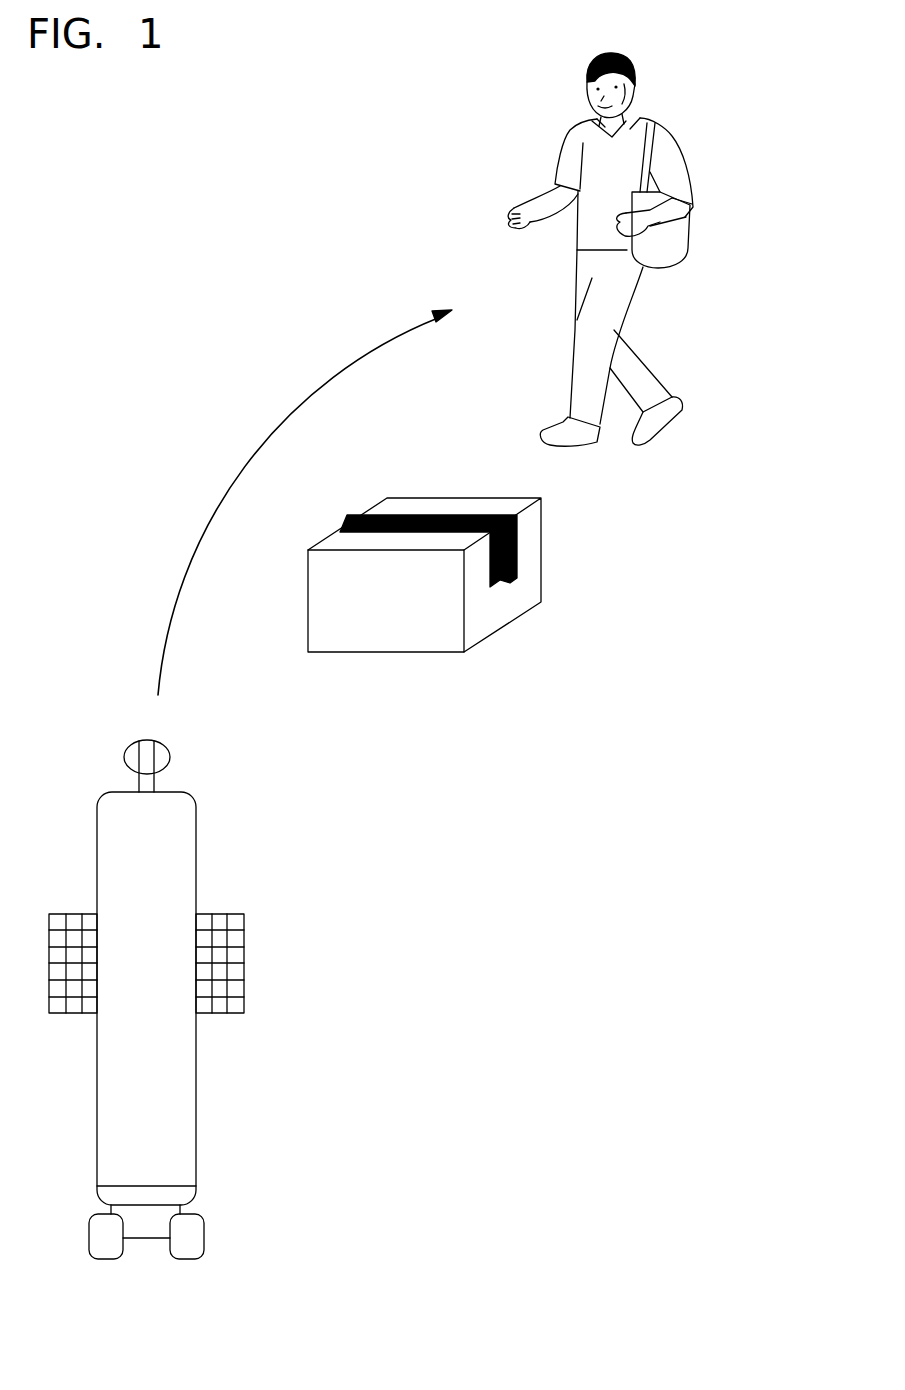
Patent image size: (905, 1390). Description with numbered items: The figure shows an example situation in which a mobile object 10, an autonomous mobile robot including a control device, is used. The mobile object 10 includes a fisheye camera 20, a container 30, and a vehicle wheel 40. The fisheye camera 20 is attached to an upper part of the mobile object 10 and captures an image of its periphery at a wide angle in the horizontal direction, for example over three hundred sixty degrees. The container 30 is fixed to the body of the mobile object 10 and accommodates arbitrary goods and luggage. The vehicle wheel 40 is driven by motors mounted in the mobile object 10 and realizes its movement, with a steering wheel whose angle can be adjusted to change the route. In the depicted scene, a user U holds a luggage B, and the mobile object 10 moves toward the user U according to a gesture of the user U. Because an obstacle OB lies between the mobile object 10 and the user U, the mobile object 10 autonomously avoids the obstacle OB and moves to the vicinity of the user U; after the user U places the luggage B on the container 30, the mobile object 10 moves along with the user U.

The user U is at (667, 138).
The luggage B is at (690, 227).
The obstacle OB is at (541, 548).
The mobile object 10 is at (97, 830).
The fisheye camera 20 is at (124, 753).
The container 30 is at (244, 940).
The vehicle wheel 40 is at (204, 1236).